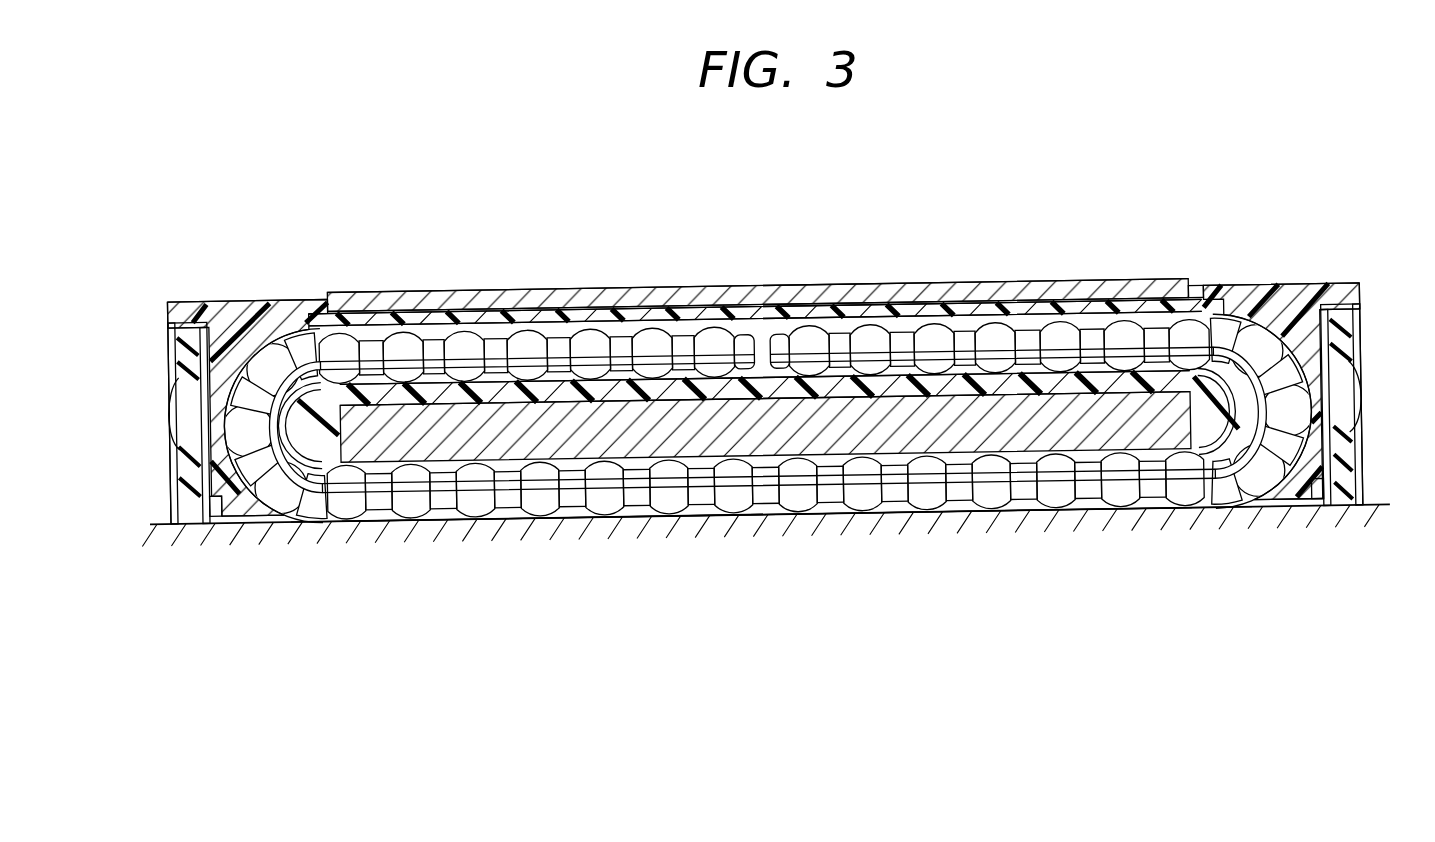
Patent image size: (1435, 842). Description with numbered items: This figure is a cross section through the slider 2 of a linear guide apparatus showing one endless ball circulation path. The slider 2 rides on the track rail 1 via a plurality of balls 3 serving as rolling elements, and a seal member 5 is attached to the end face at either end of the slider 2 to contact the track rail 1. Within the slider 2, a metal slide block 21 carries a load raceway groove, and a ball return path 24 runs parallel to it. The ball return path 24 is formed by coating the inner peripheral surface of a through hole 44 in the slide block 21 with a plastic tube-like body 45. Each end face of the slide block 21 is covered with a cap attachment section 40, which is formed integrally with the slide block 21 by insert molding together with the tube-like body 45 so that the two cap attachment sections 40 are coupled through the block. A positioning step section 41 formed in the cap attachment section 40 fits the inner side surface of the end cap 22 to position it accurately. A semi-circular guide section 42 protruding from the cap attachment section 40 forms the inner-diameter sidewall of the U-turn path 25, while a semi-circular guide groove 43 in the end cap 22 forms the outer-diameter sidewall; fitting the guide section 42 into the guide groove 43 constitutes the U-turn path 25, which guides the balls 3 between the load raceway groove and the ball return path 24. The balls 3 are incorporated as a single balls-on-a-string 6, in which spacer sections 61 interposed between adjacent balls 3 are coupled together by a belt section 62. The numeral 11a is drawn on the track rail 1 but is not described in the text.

The track rail 1 is at (1380, 519).
The slider 2 is at (962, 295).
The balls 3 is at (1006, 350).
The seal member 5 is at (176, 482).
The balls-on-a-string 6 is at (776, 350).
The raceway surface of bed 11a is at (770, 510).
The slide block 21 is at (1117, 297).
The end cap 22 is at (246, 301).
The ball return path 24 is at (504, 295).
The reverse-of-direction path (U-turn path) 25 is at (182, 375).
The cap attachment section 40 is at (756, 352).
The positioning step section 41 is at (327, 298).
The semi-circular guide section 42 is at (321, 490).
The semi-circular guide groove 43 is at (262, 513).
The through hole 44 is at (836, 304).
The tube-like body 45 is at (909, 302).
The spacer section 61 is at (691, 341).
The belt section 62 is at (665, 530).